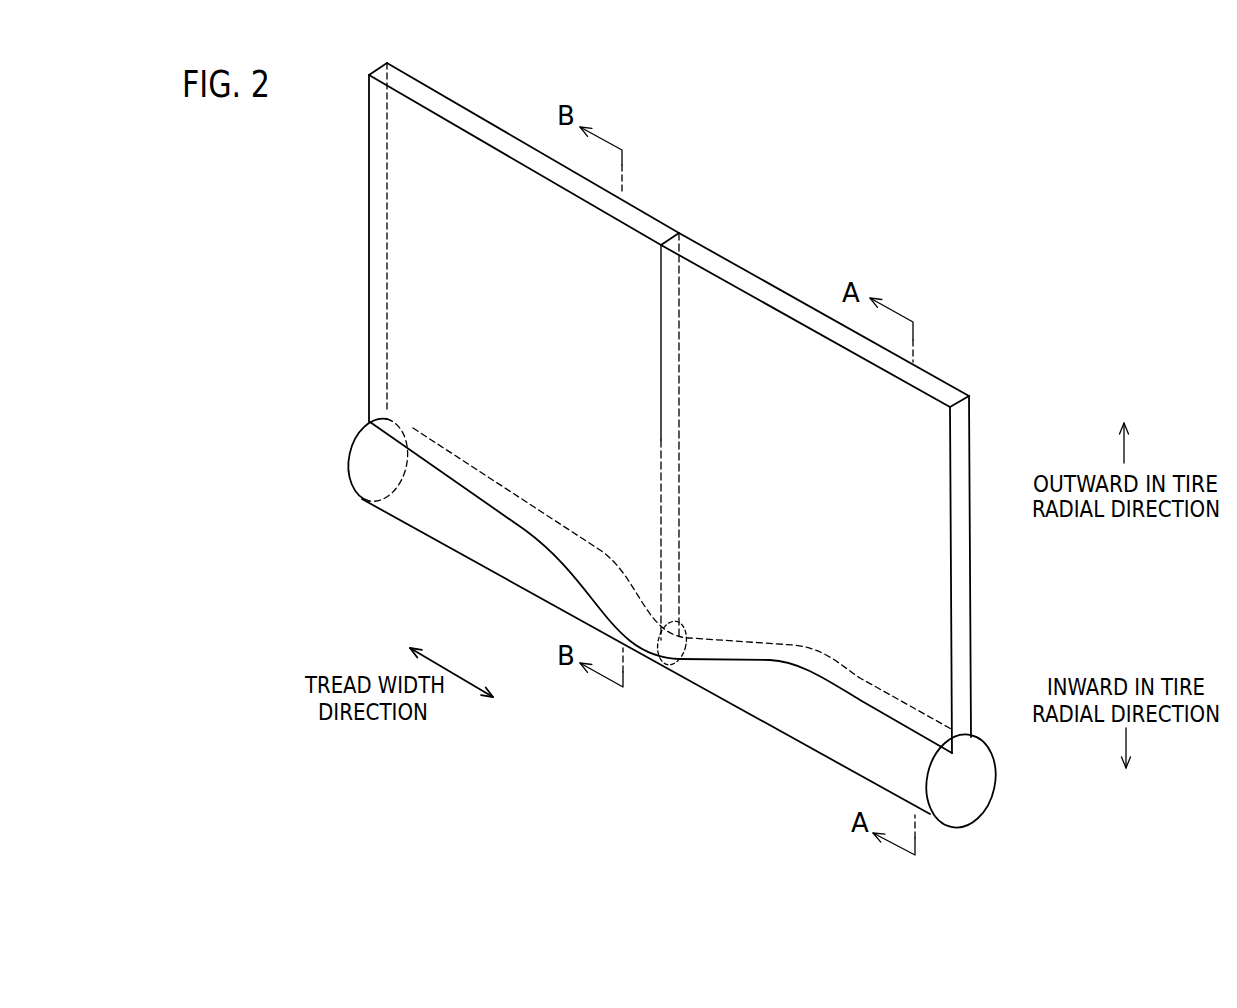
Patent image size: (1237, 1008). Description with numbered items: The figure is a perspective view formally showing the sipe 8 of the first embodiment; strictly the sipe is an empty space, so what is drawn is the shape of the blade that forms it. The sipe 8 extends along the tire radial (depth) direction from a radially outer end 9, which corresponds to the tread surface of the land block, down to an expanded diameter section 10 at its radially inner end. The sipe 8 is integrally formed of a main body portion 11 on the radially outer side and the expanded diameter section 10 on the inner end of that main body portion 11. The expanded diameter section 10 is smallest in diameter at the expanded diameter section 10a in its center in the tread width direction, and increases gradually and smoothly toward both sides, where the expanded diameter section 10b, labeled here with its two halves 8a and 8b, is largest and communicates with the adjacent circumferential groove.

The sipe 8 is at (820, 214).
The first plate portion 8a is at (524, 351).
The second plate portion 8b is at (970, 566).
The radially outer end 9 is at (953, 400).
The expanded diameter section 10 is at (974, 773).
The expanded diameter section (center portion) 10a is at (662, 657).
The expanded diameter section (side portions) 10b is at (348, 468).
The main body portion 11 is at (964, 563).